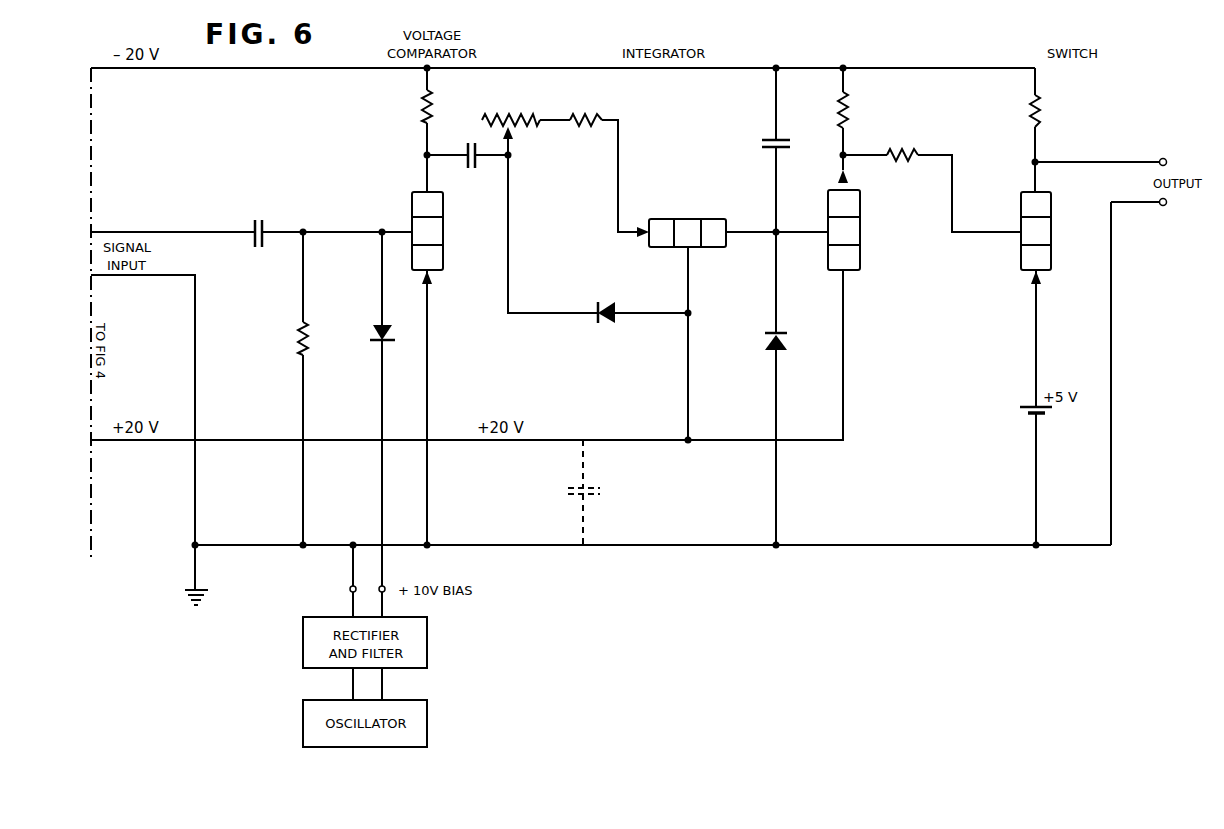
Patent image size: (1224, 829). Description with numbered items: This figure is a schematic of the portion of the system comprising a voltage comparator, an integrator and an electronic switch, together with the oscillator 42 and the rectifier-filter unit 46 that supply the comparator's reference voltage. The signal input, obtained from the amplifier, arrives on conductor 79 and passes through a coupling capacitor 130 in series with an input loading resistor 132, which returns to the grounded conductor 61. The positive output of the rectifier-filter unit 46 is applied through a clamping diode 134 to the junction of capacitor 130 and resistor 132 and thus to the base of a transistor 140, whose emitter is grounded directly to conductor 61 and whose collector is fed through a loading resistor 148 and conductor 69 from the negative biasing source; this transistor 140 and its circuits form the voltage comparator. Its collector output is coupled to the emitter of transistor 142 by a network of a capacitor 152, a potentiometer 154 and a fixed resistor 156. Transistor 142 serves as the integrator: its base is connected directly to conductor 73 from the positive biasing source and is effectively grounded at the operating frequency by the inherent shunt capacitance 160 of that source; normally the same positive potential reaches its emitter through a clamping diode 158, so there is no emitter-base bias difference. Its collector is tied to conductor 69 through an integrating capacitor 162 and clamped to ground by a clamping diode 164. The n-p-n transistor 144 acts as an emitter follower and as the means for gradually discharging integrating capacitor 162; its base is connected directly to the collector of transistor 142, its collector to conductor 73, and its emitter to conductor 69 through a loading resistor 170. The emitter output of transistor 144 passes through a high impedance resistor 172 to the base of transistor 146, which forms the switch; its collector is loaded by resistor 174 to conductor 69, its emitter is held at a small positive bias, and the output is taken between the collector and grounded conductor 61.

The conductor 69 is at (253, 70).
The loading resistor 148 is at (418, 105).
The conductor 79 is at (172, 230).
The coupling capacitor 130 is at (260, 217).
The transistor 140 is at (443, 247).
The capacitor 152 is at (472, 171).
The potentiometer 154 is at (510, 117).
The fixed resistor 156 is at (587, 117).
The transistor 142 is at (687, 217).
The integrating capacitor 162 is at (767, 138).
The loading resistor 170 is at (848, 107).
The high impedance resistor 172 is at (903, 152).
The transistor 144 is at (860, 233).
The loading resistor 174 is at (1042, 117).
The transistor 146 is at (1051, 233).
The grounded conductor 61 is at (160, 277).
The input loading resistor 132 is at (298, 340).
The clamping diode 134 is at (377, 332).
The conductor 73 is at (148, 442).
The clamping diode 158 is at (602, 325).
The shunt capacitance 160 is at (590, 485).
The clamping diode 164 is at (783, 338).
The rectifier-filter unit 46 is at (427, 645).
The oscillator 42 is at (427, 720).